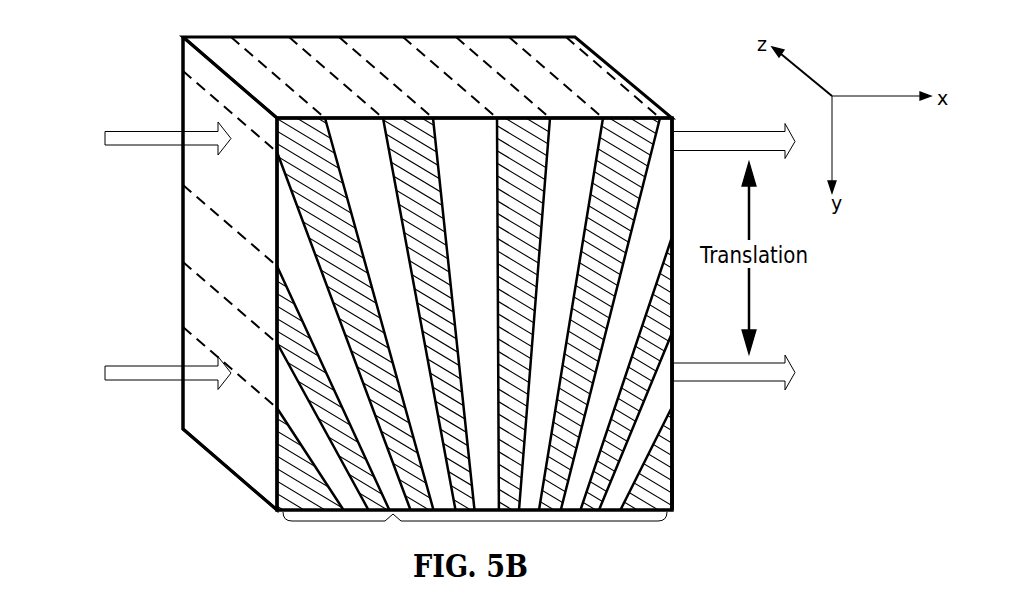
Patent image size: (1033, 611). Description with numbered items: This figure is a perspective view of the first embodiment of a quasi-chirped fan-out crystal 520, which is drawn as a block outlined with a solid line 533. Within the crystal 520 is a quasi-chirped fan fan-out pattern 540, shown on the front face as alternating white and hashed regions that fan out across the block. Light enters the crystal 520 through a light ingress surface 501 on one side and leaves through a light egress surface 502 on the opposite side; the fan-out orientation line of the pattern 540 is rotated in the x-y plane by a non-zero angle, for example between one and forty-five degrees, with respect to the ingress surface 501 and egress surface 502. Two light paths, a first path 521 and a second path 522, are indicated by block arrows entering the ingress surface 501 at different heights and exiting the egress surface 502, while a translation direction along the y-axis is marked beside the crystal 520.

The quasi-chirped fan-out crystal 520 is at (164, 45).
The first path 521 is at (140, 137).
The second path 522 is at (140, 374).
The light ingress surface 501 is at (237, 334).
The solid line 533 is at (675, 448).
The quasi-chirped fan fan-out pattern 540 is at (475, 531).
The light egress surface 502 is at (672, 528).